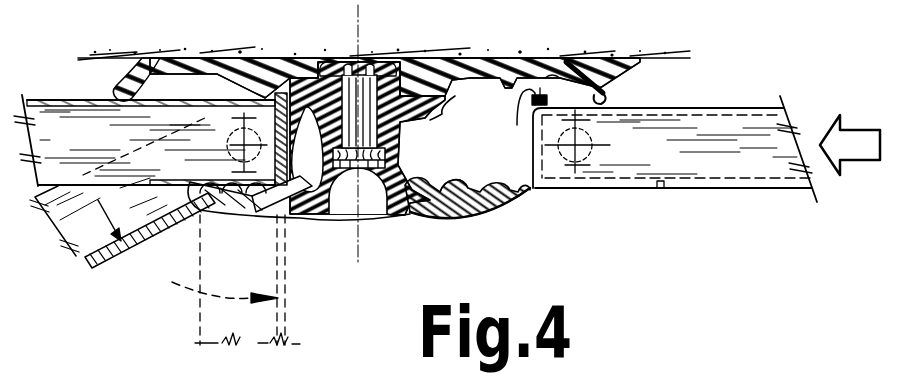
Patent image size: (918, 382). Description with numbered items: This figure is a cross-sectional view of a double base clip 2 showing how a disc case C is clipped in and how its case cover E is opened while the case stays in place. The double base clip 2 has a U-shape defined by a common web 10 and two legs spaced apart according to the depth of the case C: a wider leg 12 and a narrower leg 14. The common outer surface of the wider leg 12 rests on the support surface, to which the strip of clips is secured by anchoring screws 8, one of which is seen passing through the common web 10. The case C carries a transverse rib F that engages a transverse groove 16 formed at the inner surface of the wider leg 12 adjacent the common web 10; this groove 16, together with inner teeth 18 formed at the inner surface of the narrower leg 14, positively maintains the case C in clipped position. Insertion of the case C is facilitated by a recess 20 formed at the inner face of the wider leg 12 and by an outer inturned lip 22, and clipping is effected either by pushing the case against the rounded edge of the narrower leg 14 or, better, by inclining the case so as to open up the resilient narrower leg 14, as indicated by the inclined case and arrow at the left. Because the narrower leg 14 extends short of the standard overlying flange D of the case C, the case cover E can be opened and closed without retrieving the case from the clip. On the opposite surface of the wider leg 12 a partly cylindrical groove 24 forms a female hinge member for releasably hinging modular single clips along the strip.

The double base clip 2 is at (533, 205).
The anchoring screw 8 is at (338, 64).
The common web 10 is at (398, 125).
The wider leg 12 is at (457, 80).
The narrower leg 14 is at (470, 182).
The transverse groove 16 is at (447, 104).
The inner teeth 18 is at (456, 185).
The recess 20 is at (537, 60).
The outer inturned lip 22 is at (612, 97).
The partly cylindrical groove 24 is at (377, 193).
The disc case C is at (42, 125).
The overlying flange D is at (186, 185).
The case cover E is at (697, 188).
The transverse rib F is at (458, 125).